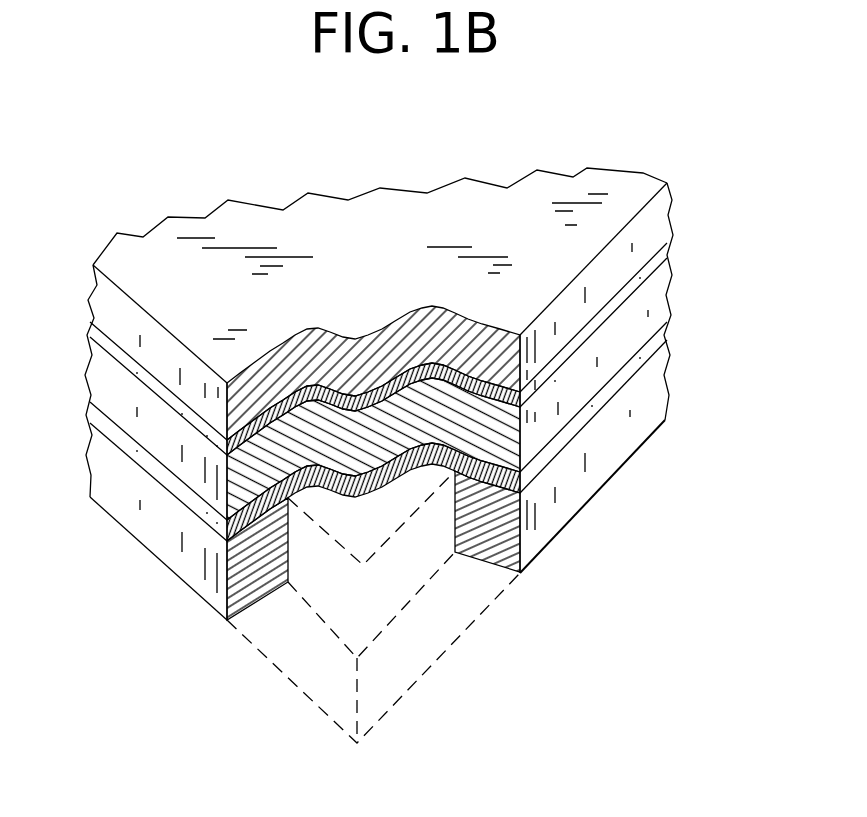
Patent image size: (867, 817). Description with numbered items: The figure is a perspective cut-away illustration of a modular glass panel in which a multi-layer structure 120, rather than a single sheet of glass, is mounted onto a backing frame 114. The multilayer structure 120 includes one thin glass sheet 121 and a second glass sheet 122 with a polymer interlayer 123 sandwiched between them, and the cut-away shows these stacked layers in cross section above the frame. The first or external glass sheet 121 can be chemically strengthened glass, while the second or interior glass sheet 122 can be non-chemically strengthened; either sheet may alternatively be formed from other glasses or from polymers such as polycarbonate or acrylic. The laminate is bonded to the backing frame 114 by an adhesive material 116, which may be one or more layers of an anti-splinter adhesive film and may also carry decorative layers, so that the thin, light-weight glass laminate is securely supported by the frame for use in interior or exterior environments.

The backing frame 114 is at (630, 435).
The adhesive material 116 is at (659, 339).
The multi-layer structure 120 is at (688, 172).
The thin glass sheet 121 is at (389, 340).
The second glass sheet 122 is at (277, 447).
The polymer interlayer 123 is at (468, 372).